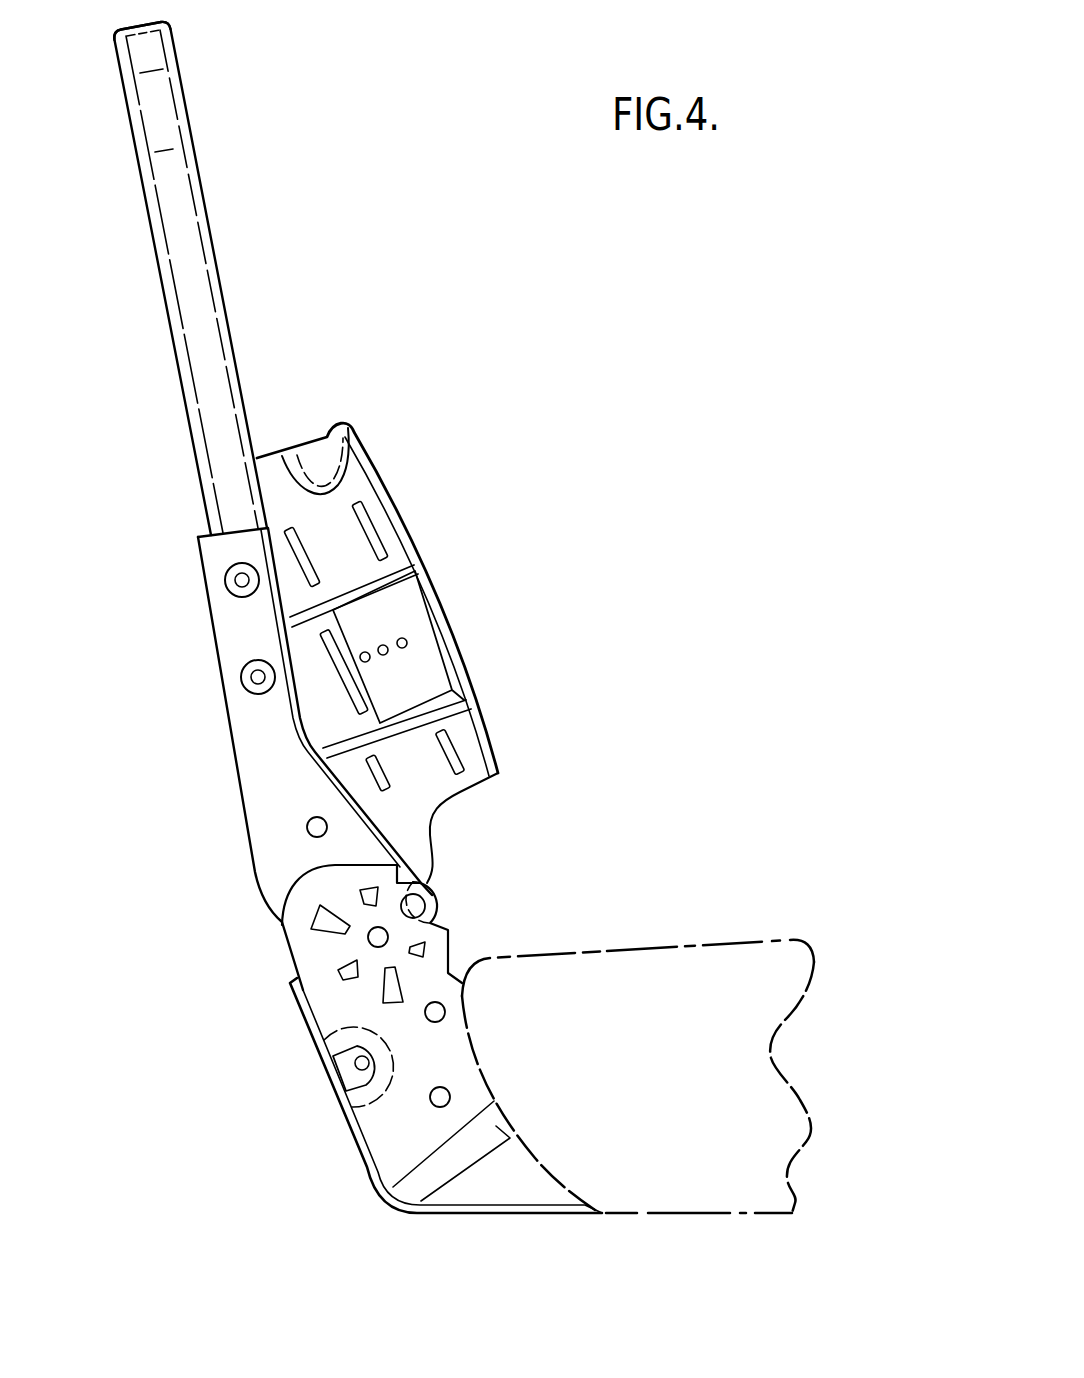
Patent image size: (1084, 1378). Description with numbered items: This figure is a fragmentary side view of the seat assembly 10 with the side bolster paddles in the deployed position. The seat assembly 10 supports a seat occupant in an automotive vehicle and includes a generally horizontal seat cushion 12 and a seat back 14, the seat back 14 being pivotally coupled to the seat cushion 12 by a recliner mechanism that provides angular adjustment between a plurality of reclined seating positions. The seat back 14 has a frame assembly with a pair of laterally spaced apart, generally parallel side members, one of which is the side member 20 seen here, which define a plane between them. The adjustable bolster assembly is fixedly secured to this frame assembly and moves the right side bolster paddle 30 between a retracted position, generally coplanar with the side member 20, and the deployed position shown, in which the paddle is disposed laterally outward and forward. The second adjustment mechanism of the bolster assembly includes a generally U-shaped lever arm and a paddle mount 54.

The seat assembly 10 is at (606, 491).
The seat cushion 12 is at (735, 942).
The seat back 14 is at (120, 33).
The side member 20 is at (188, 186).
The right side bolster paddle 30 is at (380, 476).
The paddle mount 54 is at (398, 733).